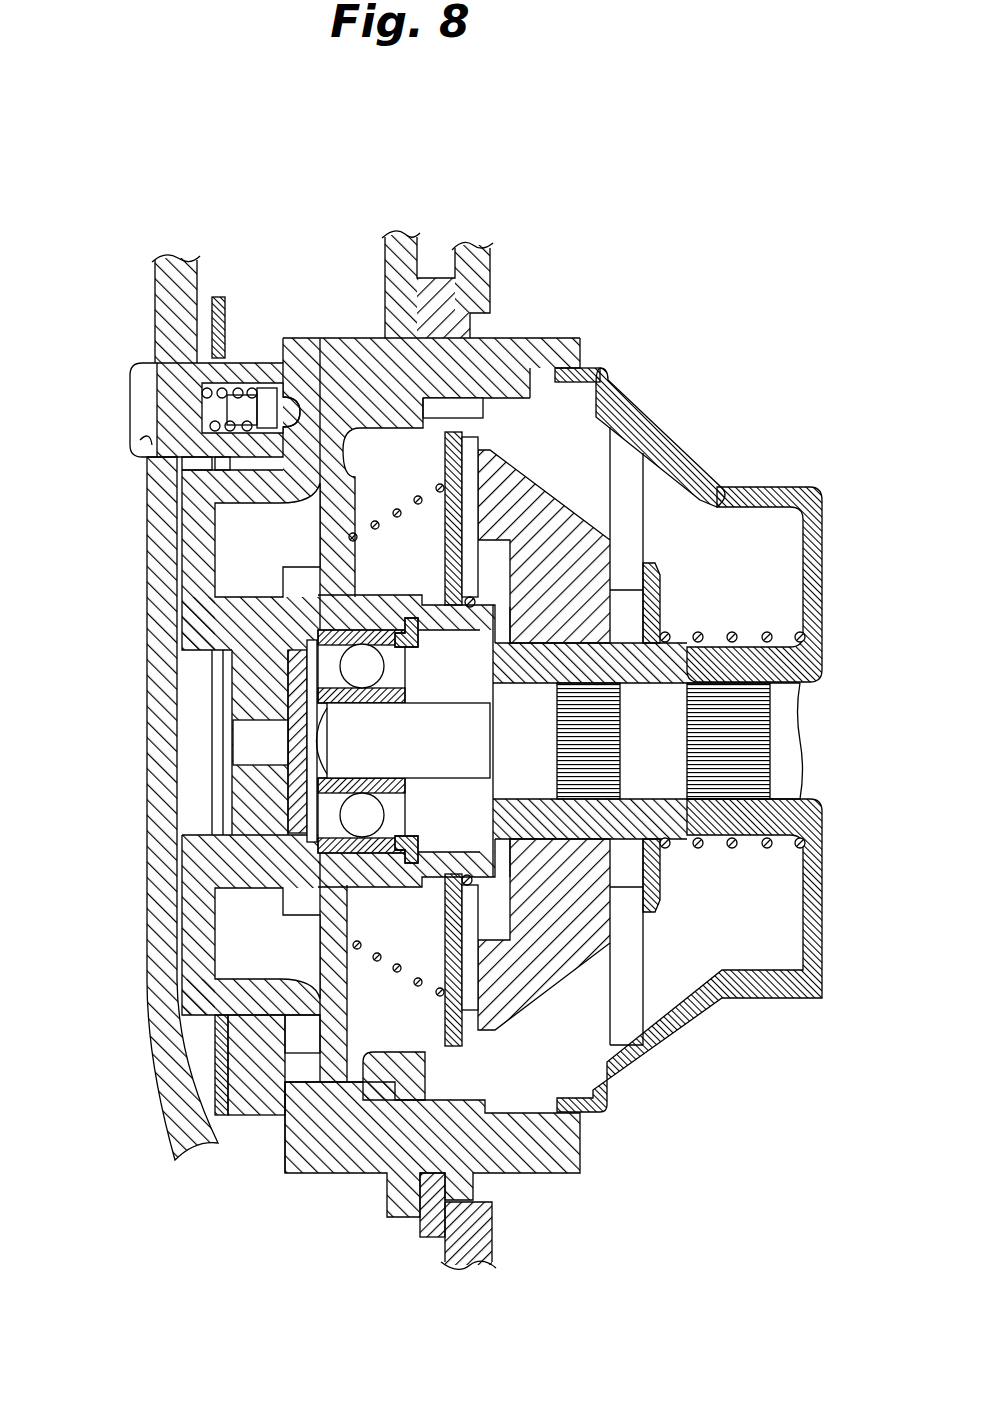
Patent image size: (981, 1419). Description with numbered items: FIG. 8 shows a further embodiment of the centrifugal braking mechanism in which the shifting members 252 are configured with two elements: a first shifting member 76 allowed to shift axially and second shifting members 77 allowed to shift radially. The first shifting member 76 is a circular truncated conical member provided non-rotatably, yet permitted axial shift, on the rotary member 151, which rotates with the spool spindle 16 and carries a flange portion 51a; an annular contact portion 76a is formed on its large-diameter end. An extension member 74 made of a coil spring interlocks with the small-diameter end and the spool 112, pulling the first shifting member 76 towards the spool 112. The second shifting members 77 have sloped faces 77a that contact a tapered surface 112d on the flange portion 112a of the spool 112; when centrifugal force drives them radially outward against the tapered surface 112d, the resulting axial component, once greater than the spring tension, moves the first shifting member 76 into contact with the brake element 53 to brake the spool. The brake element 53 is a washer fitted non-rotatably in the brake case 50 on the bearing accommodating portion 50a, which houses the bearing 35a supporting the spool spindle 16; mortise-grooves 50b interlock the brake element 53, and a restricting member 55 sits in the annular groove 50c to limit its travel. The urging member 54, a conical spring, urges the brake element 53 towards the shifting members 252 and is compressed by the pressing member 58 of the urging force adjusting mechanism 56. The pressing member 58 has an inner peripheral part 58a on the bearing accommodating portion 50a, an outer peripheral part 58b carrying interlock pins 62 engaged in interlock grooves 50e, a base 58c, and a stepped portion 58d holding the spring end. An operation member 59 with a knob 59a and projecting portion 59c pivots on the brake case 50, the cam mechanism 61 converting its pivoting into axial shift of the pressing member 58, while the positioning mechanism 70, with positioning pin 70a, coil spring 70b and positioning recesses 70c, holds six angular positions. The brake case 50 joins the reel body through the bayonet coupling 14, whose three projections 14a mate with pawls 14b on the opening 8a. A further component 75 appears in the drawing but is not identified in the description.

The opening 8a is at (468, 325).
The bayonet coupling 14 is at (500, 281).
The projections 14a is at (487, 327).
The pawls 14b is at (428, 295).
The spool spindle 16 is at (665, 775).
The bearing 35a is at (392, 695).
The brake case 50 is at (208, 548).
The bearing accommodating portion 50a is at (330, 613).
The mortise-grooves 50b is at (423, 598).
The annular groove 50c is at (482, 608).
The interlock grooves 50e is at (567, 392).
The flange portion 51a is at (497, 862).
The brake element 53 is at (462, 440).
The urging member 54 is at (393, 509).
The restricting member 55 is at (471, 597).
The urging force adjusting mechanism 56 is at (263, 1125).
The pressing member 58 is at (351, 1070).
The inner peripheral part 58a is at (297, 588).
The outer peripheral part 58b is at (362, 415).
The base 58c is at (330, 520).
The stepped portion 58d is at (357, 948).
The operation member 59 is at (238, 1097).
The knob 59a is at (183, 383).
The projecting portion 59c is at (150, 410).
The cam mechanism 61 is at (315, 1074).
The interlock pins 62 is at (580, 352).
The positioning mechanism 70 is at (237, 358).
The positioning pin 70a is at (247, 395).
The coil spring 70b is at (215, 297).
The positioning recesses 70c is at (285, 398).
The extension member 74 is at (733, 633).
The member 75 is at (218, 1068).
The first shifting member 76 is at (564, 589).
The annular contact portion 76a is at (445, 470).
The second shifting members 77 is at (628, 526).
The faces 77a is at (632, 442).
The spool 112 is at (706, 419).
The flange portion 112a is at (610, 394).
The tapered surface 112d is at (699, 472).
The rotary member 151 is at (672, 657).
The shifting members 252 is at (552, 486).